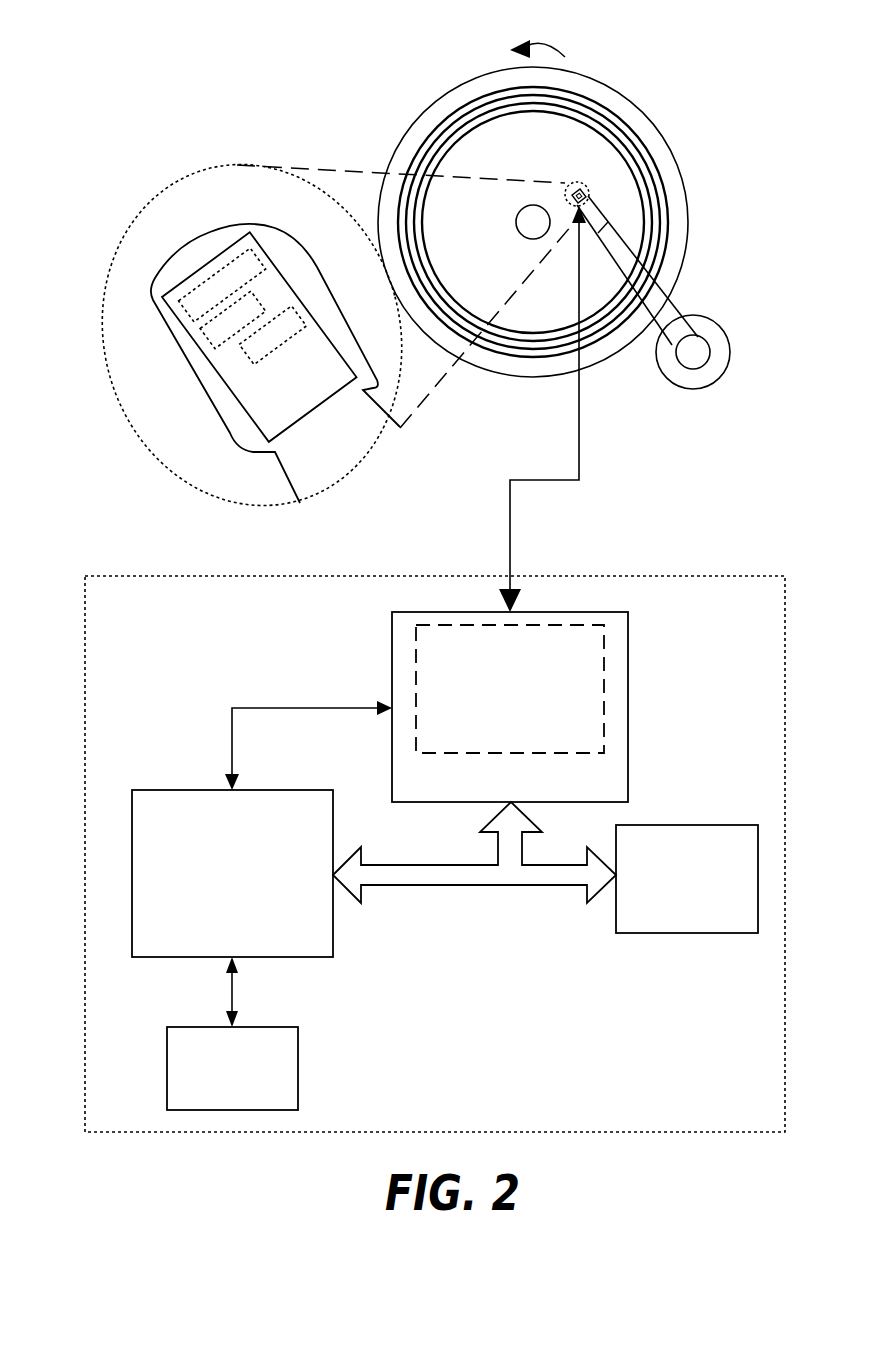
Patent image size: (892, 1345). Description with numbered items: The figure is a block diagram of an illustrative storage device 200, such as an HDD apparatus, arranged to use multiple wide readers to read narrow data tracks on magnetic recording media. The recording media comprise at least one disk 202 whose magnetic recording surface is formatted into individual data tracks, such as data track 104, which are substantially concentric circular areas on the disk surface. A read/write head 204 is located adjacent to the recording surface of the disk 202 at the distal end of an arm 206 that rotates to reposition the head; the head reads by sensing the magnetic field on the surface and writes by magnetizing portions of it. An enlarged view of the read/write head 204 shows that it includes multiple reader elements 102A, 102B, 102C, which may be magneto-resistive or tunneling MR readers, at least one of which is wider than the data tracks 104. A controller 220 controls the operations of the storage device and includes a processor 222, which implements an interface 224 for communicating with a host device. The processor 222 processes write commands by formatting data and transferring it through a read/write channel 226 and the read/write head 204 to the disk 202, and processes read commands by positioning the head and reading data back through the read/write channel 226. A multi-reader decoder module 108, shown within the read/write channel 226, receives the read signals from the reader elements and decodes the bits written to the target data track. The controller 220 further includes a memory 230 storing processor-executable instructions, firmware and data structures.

The storage device 200 is at (108, 74).
The data track 104 is at (601, 106).
The disk 202 is at (552, 153).
The read/write head 204 is at (600, 177).
The arm 206 is at (677, 308).
The reader element 102A is at (221, 286).
The reader element 102B is at (222, 326).
The reader element 102C is at (278, 330).
The multi-reader decoder module 108 is at (495, 744).
The read/write channel 226 is at (616, 792).
The processor 222 is at (215, 897).
The interface 224 is at (670, 918).
The memory 230 is at (215, 1094).
The controller 220 is at (775, 1118).